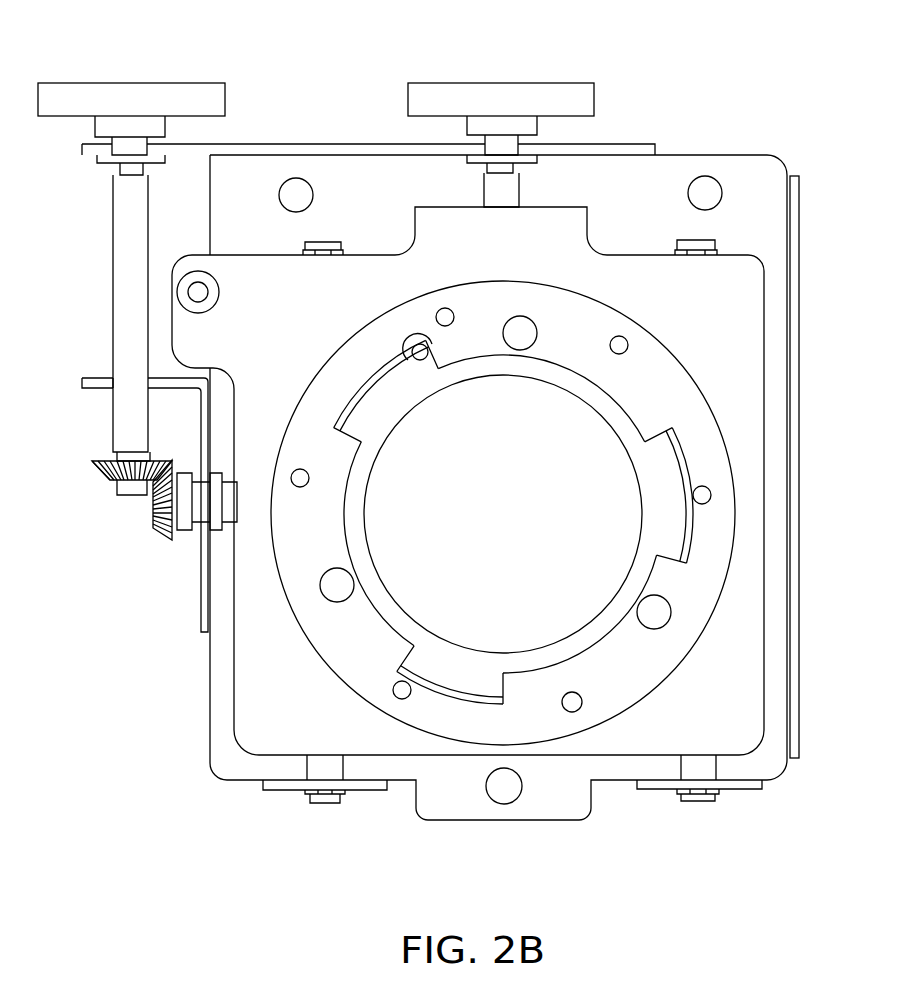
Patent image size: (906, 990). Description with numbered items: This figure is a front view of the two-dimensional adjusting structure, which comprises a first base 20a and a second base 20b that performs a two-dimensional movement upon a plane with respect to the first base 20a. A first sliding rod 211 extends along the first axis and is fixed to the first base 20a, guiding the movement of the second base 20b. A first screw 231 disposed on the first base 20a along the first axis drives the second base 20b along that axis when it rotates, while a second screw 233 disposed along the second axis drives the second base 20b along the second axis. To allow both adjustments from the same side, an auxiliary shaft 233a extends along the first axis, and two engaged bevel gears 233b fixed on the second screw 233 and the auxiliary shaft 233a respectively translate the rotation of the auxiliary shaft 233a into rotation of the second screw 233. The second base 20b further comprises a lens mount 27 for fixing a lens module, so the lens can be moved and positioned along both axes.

The first base 20a is at (680, 165).
The second base 20b is at (743, 290).
The first sliding rod 211 is at (325, 803).
The first screw 231 is at (500, 82).
The second screw 233 is at (198, 508).
The auxiliary shaft 233a is at (132, 82).
The bevel gears 233b is at (155, 530).
The lens mount 27 is at (330, 646).